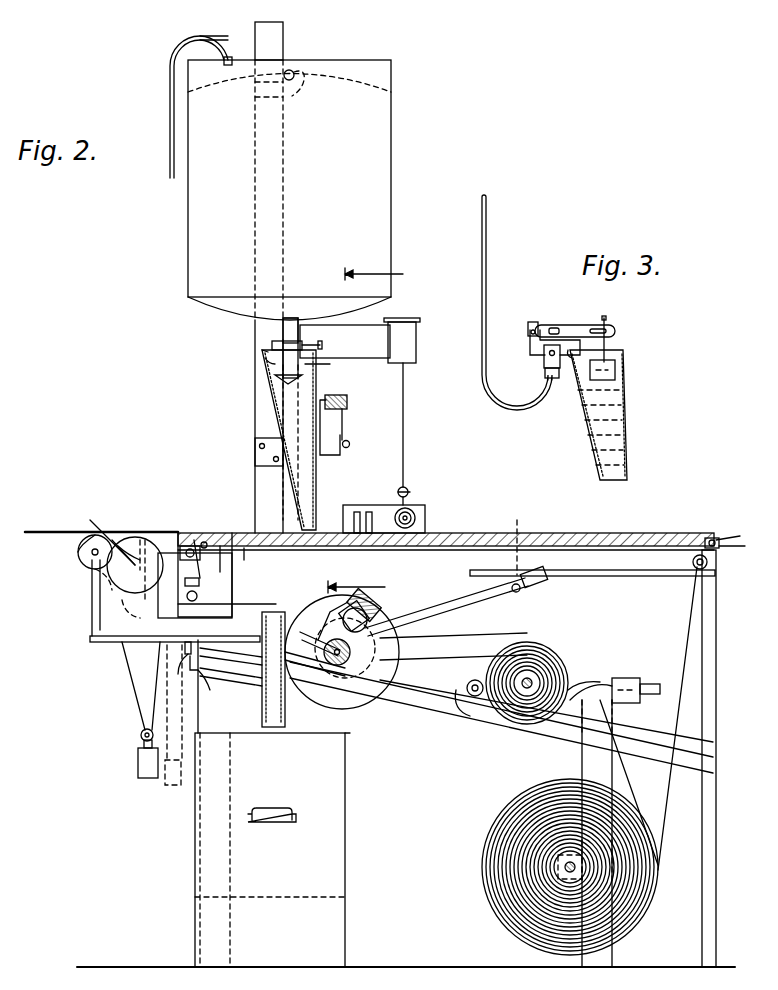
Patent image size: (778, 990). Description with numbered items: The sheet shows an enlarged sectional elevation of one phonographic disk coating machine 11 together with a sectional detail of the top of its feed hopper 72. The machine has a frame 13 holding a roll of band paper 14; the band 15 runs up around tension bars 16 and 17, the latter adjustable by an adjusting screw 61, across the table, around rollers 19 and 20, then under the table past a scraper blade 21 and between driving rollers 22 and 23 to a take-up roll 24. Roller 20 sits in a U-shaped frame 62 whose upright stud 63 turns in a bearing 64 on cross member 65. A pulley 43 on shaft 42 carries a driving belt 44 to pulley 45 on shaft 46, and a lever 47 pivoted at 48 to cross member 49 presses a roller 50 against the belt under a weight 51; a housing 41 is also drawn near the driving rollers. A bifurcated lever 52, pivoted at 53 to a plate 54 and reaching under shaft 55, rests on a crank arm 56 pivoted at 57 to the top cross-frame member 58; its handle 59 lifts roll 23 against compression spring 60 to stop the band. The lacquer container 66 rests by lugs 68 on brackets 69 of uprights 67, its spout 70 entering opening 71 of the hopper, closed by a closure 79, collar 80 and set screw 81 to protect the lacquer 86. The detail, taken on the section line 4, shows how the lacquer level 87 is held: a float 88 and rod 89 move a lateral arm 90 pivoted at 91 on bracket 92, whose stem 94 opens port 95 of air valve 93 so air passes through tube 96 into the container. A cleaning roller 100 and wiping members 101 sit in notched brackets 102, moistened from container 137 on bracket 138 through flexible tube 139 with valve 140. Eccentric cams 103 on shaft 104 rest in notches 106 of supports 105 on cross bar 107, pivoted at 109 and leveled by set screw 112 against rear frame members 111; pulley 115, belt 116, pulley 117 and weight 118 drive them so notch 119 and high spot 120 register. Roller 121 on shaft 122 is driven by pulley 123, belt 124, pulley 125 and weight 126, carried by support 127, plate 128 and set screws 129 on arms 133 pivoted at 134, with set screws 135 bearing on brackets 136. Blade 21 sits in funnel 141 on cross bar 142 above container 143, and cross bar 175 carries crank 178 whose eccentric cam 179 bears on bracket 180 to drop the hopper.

In FIG. 2, the section line 4 is at (371, 432).
In FIG. 2, the phonographic disk coating machine 11 is at (445, 533).
In FIG. 2, the frame 13 is at (718, 688).
In FIG. 2, the roll of band paper 14 is at (482, 855).
In FIG. 2, the band 15 is at (668, 793).
In FIG. 2, the tension bar 16 is at (706, 566).
In FIG. 2, the tension bar 17 is at (712, 538).
In FIG. 2, the roller 19 is at (190, 546).
In FIG. 2, the roller 20 is at (158, 600).
In FIG. 2, the scraper blade 21 is at (227, 605).
In FIG. 2, the driving roller 22 is at (345, 680).
In FIG. 2, the driving roller 23 is at (370, 628).
In FIG. 2, the take-up roll 24 is at (556, 660).
In FIG. 2, the housing 41 is at (330, 715).
In FIG. 2, the shaft 42 is at (320, 690).
In FIG. 2, the pulley 43 is at (365, 680).
In FIG. 2, the driving belt 44 is at (435, 698).
In FIG. 2, the pulley 45 is at (556, 668).
In FIG. 2, the shaft 46 is at (530, 680).
In FIG. 2, the lever 47 is at (606, 678).
In FIG. 2, the pivot 48 is at (510, 712).
In FIG. 2, the cross member 49 is at (640, 740).
In FIG. 2, the roller 50 is at (460, 700).
In FIG. 2, the weight 51 is at (636, 678).
In FIG. 2, the bifurcated lever 52 is at (440, 604).
In FIG. 2, the pivot point 53 is at (318, 612).
In FIG. 2, the plate 54 is at (385, 655).
In FIG. 2, the shaft 55 is at (348, 606).
In FIG. 2, the crank arm 56 is at (518, 592).
In FIG. 2, the pivot point 57 is at (523, 541).
In FIG. 2, the top cross-frame member 58 is at (598, 576).
In FIG. 2, the handle 59 is at (500, 588).
In FIG. 2, the compression spring 60 is at (378, 604).
In FIG. 2, the adjusting screw 61 is at (735, 548).
In FIG. 2, the U-shaped frame 62 is at (199, 582).
In FIG. 2, the upright stud 63 is at (148, 540).
In FIG. 2, the bearing 64 is at (220, 546).
In FIG. 2, the cross member 65 is at (244, 548).
In FIG. 2, the container 66 is at (391, 185).
In FIG. 2, the upright 67 is at (255, 412).
In FIG. 2, the lug 68 is at (292, 72).
In FIG. 2, the bracket 69 is at (296, 98).
In FIG. 2, the spout 70 is at (292, 318).
In FIG. 2, the opening 71 is at (328, 367).
In FIG. 2, the feed hopper 72 is at (270, 390).
In FIG. 3, the feed hopper 72 is at (626, 456).
In FIG. 2, the closure 79 is at (275, 377).
In FIG. 2, the collar 80 is at (272, 343).
In FIG. 2, the set screw 81 is at (322, 345).
In FIG. 3, the lacquer 86 is at (625, 430).
In FIG. 2, the lacquer level 87 is at (262, 356).
In FIG. 3, the lacquer level 87 is at (578, 376).
In FIG. 3, the float 88 is at (615, 366).
In FIG. 3, the rod 89 is at (625, 350).
In FIG. 3, the lateral arm 90 is at (585, 325).
In FIG. 3, the pivot 91 is at (530, 322).
In FIG. 3, the bracket 92 is at (530, 342).
In FIG. 3, the air valve 93 is at (545, 373).
In FIG. 3, the stem 94 is at (556, 328).
In FIG. 3, the port 95 is at (544, 358).
In FIG. 2, the tube 96 is at (170, 140).
In FIG. 3, the tube 96 is at (486, 250).
In FIG. 2, the roller 100 is at (420, 505).
In FIG. 2, the stationary wiping member 101 is at (360, 510).
In FIG. 2, the notched bracket 102 is at (412, 510).
In FIG. 2, the eccentric cam 103 is at (112, 540).
In FIG. 2, the shaft 104 is at (106, 532).
In FIG. 2, the support 105 is at (108, 585).
In FIG. 2, the notch 106 is at (140, 540).
In FIG. 2, the cross bar 107 is at (215, 617).
In FIG. 2, the pivot 109 is at (204, 542).
In FIG. 2, the rear vertical frame member 111 is at (235, 710).
In FIG. 2, the set screw 112 is at (194, 540).
In FIG. 2, the pulley 115 is at (95, 575).
In FIG. 2, the endless belt 116 is at (167, 706).
In FIG. 2, the pulley 117 is at (182, 742).
In FIG. 2, the weight 118 is at (168, 784).
In FIG. 2, the notch 119 is at (118, 546).
In FIG. 2, the high spot 120 is at (122, 606).
In FIG. 2, the roller 121 is at (85, 560).
In FIG. 2, the shaft 122 is at (92, 553).
In FIG. 2, the pulley 123 is at (78, 545).
In FIG. 2, the endless belt 124 is at (128, 660).
In FIG. 2, the pulley 125 is at (141, 735).
In FIG. 2, the weight 126 is at (138, 763).
In FIG. 2, the support 127 is at (92, 625).
In FIG. 2, the plate 128 is at (185, 650).
In FIG. 2, the set screw 129 is at (160, 642).
In FIG. 2, the arm 133 is at (240, 655).
In FIG. 2, the pivot 134 is at (245, 684).
In FIG. 2, the set screw 135 is at (178, 674).
In FIG. 2, the bracket 136 is at (208, 678).
In FIG. 2, the container 137 is at (408, 340).
In FIG. 2, the bracket 138 is at (370, 325).
In FIG. 2, the flexible tube 139 is at (405, 400).
In FIG. 2, the valve 140 is at (407, 488).
In FIG. 2, the funnel 141 is at (270, 727).
In FIG. 2, the cross bar 142 is at (313, 639).
In FIG. 2, the container 143 is at (195, 850).
In FIG. 2, the cross bar 175 is at (344, 418).
In FIG. 2, the crank 178 is at (350, 440).
In FIG. 2, the eccentric cam 179 is at (336, 395).
In FIG. 2, the bracket 180 is at (338, 446).